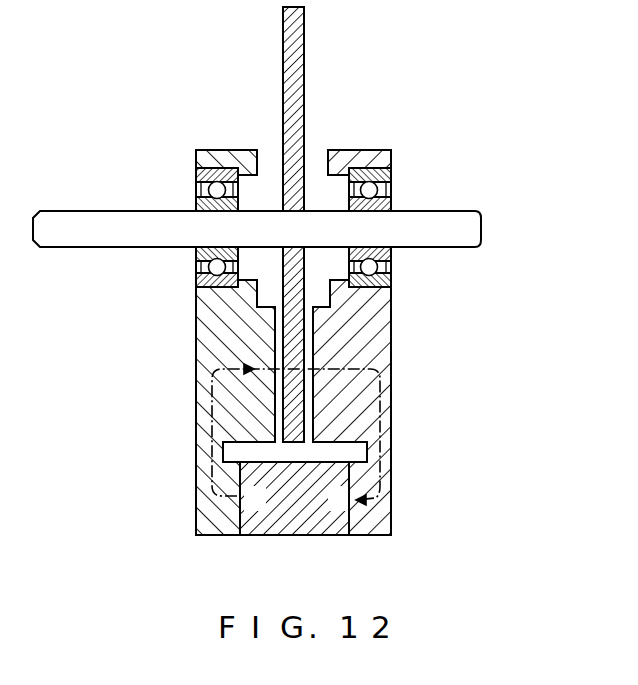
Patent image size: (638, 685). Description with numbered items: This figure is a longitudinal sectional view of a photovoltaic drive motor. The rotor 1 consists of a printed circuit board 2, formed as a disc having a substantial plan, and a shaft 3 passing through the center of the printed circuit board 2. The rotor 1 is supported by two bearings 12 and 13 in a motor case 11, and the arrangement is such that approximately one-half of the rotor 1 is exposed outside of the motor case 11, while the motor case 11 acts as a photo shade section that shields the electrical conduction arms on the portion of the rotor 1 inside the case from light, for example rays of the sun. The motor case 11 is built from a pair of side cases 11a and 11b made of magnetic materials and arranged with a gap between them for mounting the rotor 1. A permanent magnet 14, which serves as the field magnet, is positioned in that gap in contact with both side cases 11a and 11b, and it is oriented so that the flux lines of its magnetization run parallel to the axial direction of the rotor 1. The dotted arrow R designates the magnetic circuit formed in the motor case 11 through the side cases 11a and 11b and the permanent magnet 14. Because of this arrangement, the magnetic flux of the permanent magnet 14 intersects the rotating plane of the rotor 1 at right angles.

The rotor 1 is at (293, 224).
The printed circuit board 2 is at (282, 31).
The shaft 3 is at (73, 220).
The motor case 11 is at (300, 407).
The side case 11a is at (193, 447).
The side case 11b is at (393, 443).
The bearing 12 is at (194, 180).
The bearing 13 is at (392, 182).
The permanent magnet 14 is at (305, 535).
The magnetic circuit R is at (393, 473).